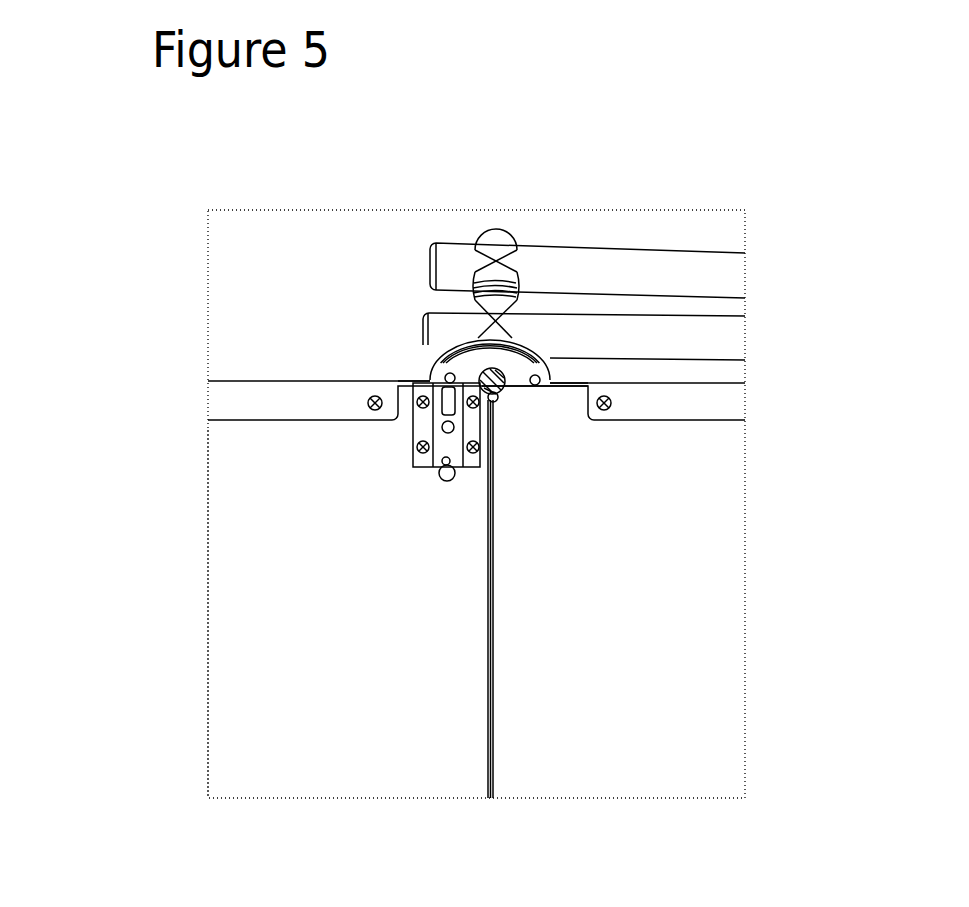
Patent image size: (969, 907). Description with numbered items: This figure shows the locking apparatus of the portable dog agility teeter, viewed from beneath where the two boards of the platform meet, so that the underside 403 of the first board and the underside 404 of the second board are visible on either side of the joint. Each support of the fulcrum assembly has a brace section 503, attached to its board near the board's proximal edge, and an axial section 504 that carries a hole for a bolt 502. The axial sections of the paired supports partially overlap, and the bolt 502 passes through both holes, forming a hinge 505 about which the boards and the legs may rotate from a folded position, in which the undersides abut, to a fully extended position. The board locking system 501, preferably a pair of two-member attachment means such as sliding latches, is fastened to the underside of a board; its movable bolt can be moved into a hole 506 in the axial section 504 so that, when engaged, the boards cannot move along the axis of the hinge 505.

The underside 403 is at (691, 727).
The underside 404 is at (226, 688).
The board locking system 501 is at (368, 456).
The bolt 502 is at (529, 412).
The brace section 503 is at (180, 387).
The axial section 504 is at (575, 372).
The hinge 505 is at (450, 223).
The hole 506 is at (423, 354).